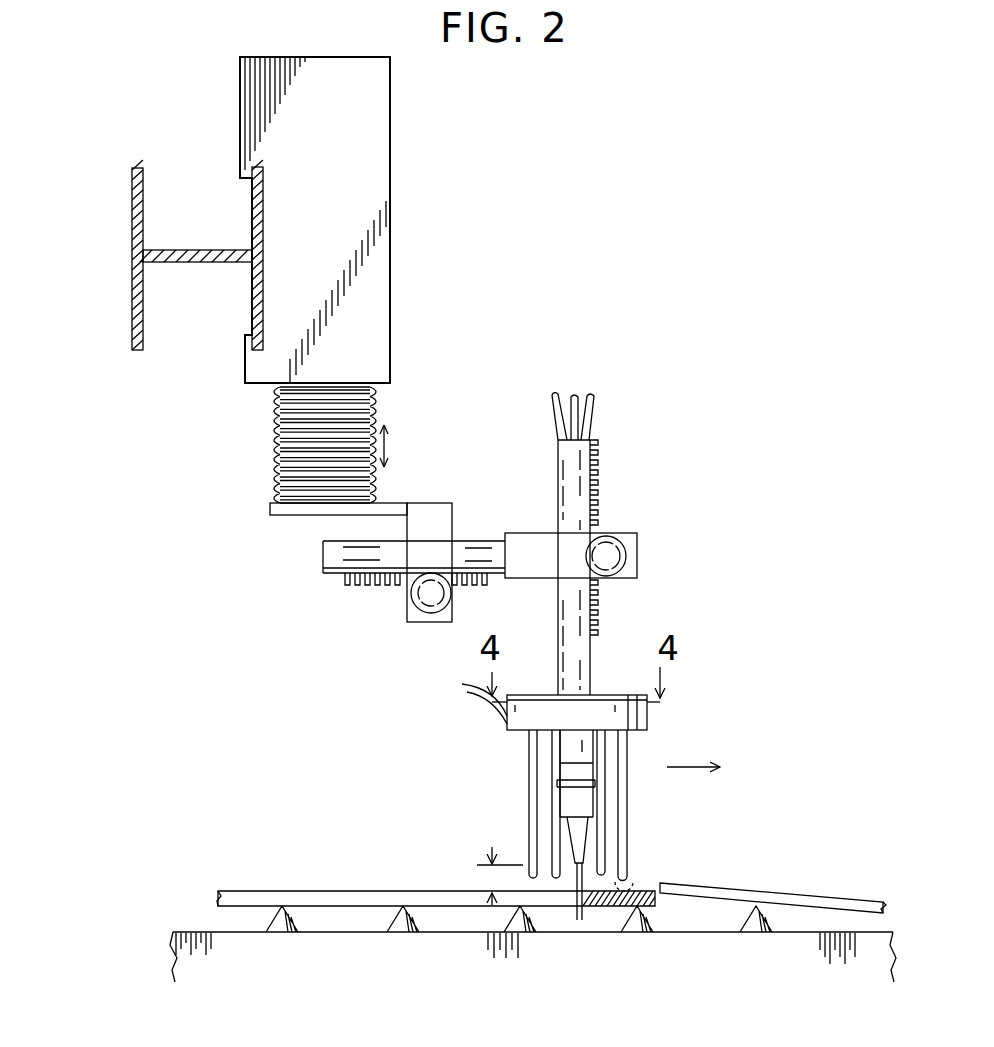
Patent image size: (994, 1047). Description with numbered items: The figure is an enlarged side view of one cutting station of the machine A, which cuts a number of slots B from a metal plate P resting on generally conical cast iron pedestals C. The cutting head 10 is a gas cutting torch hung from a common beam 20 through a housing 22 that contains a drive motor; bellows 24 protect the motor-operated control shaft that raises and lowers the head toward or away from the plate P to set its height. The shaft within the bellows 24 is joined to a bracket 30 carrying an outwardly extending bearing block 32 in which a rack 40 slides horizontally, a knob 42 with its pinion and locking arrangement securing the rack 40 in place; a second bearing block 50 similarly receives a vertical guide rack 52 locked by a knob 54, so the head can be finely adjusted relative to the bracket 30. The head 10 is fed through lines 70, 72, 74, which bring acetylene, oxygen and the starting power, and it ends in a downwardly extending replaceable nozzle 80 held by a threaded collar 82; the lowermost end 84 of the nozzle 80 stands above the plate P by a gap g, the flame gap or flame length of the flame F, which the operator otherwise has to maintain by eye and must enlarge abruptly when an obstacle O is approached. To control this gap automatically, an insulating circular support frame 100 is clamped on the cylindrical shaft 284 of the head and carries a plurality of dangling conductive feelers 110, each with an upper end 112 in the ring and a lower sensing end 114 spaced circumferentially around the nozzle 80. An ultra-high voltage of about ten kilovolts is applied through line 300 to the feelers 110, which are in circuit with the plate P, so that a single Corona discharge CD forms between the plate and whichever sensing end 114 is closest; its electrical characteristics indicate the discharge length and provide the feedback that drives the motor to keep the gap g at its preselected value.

The machine A is at (622, 137).
The cutting head 10 is at (594, 803).
The beam 20 is at (138, 183).
The housing 22 is at (392, 163).
The bellows 24 is at (280, 433).
The bracket 30 is at (300, 510).
The bearing block 32 is at (435, 505).
The rack 40 is at (479, 540).
The knob 42 is at (427, 612).
The bearing block 50 is at (638, 546).
The guide rack 52 is at (591, 470).
The knob 54 is at (612, 540).
The tube 70 is at (556, 392).
The gas line 72 is at (577, 396).
The electrical control line 74 is at (591, 401).
The cylindrical shaft 284 is at (568, 693).
The line 300 is at (473, 704).
The support frame 100 is at (507, 728).
The upper end 112 is at (633, 737).
The feeler 110 is at (552, 773).
The threaded collar 82 is at (572, 805).
The nozzle 80 is at (584, 849).
The lowermost end 84 is at (578, 866).
The sensing end 114 is at (637, 864).
The obstacle O is at (655, 880).
The gap g is at (500, 890).
The slot B is at (375, 895).
The metal plate P is at (279, 889).
The pedestal C is at (280, 925).
The Corona discharge CD is at (622, 893).
The flame F is at (587, 907).